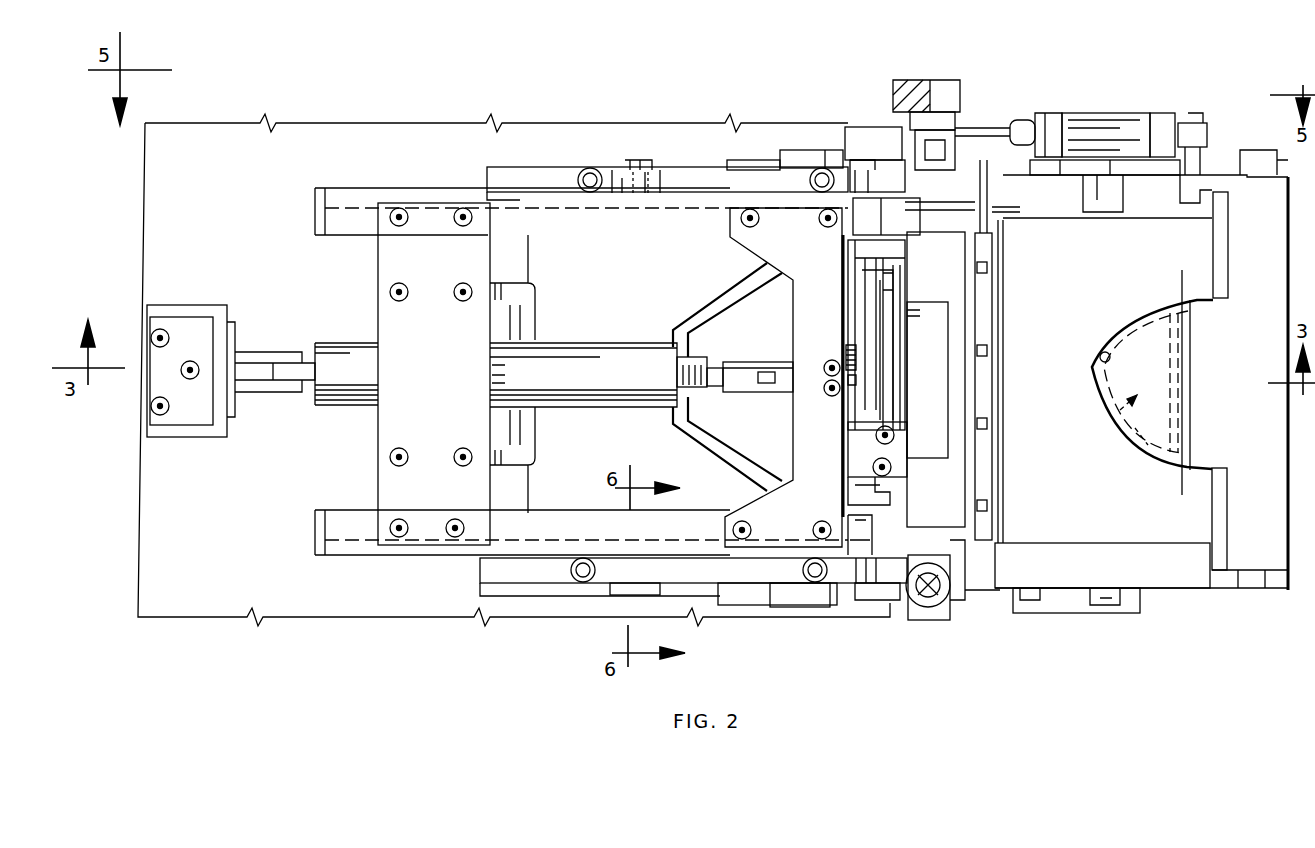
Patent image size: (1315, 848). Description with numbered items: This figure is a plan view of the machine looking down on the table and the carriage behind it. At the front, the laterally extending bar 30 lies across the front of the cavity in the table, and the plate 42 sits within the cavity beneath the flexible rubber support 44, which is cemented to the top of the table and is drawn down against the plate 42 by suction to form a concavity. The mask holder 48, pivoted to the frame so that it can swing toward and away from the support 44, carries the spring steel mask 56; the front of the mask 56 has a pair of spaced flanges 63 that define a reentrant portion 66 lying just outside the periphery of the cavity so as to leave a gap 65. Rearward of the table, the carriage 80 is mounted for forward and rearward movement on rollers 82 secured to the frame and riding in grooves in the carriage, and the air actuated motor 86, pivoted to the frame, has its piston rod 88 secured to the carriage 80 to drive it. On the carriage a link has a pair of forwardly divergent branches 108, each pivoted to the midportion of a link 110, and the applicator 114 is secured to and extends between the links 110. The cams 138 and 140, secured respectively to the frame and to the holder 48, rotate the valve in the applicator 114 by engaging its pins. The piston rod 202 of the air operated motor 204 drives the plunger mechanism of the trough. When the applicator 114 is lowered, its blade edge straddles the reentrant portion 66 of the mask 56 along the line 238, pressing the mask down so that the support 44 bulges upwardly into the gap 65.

The laterally extending bar 30 is at (1183, 360).
The plate 42 is at (1145, 425).
The support 44 is at (1224, 498).
The mask holder 48 is at (1160, 588).
The mask 56 is at (1097, 528).
The flanges 63 is at (1203, 253).
The gap 65 is at (1118, 412).
The reentrant portion 66 is at (1100, 357).
The carriage 80 is at (441, 200).
The rollers 82 is at (628, 203).
The air actuated motor 86 is at (613, 365).
The piston rod 88 is at (710, 370).
The forwardly divergent branches 108 is at (742, 290).
The link 110 is at (890, 512).
The applicator 114 is at (950, 274).
The cam 138 is at (1205, 182).
The cam 140 is at (1103, 212).
The piston rod 202 is at (866, 362).
The air operated motor 204 is at (848, 342).
The line 238 is at (1185, 293).